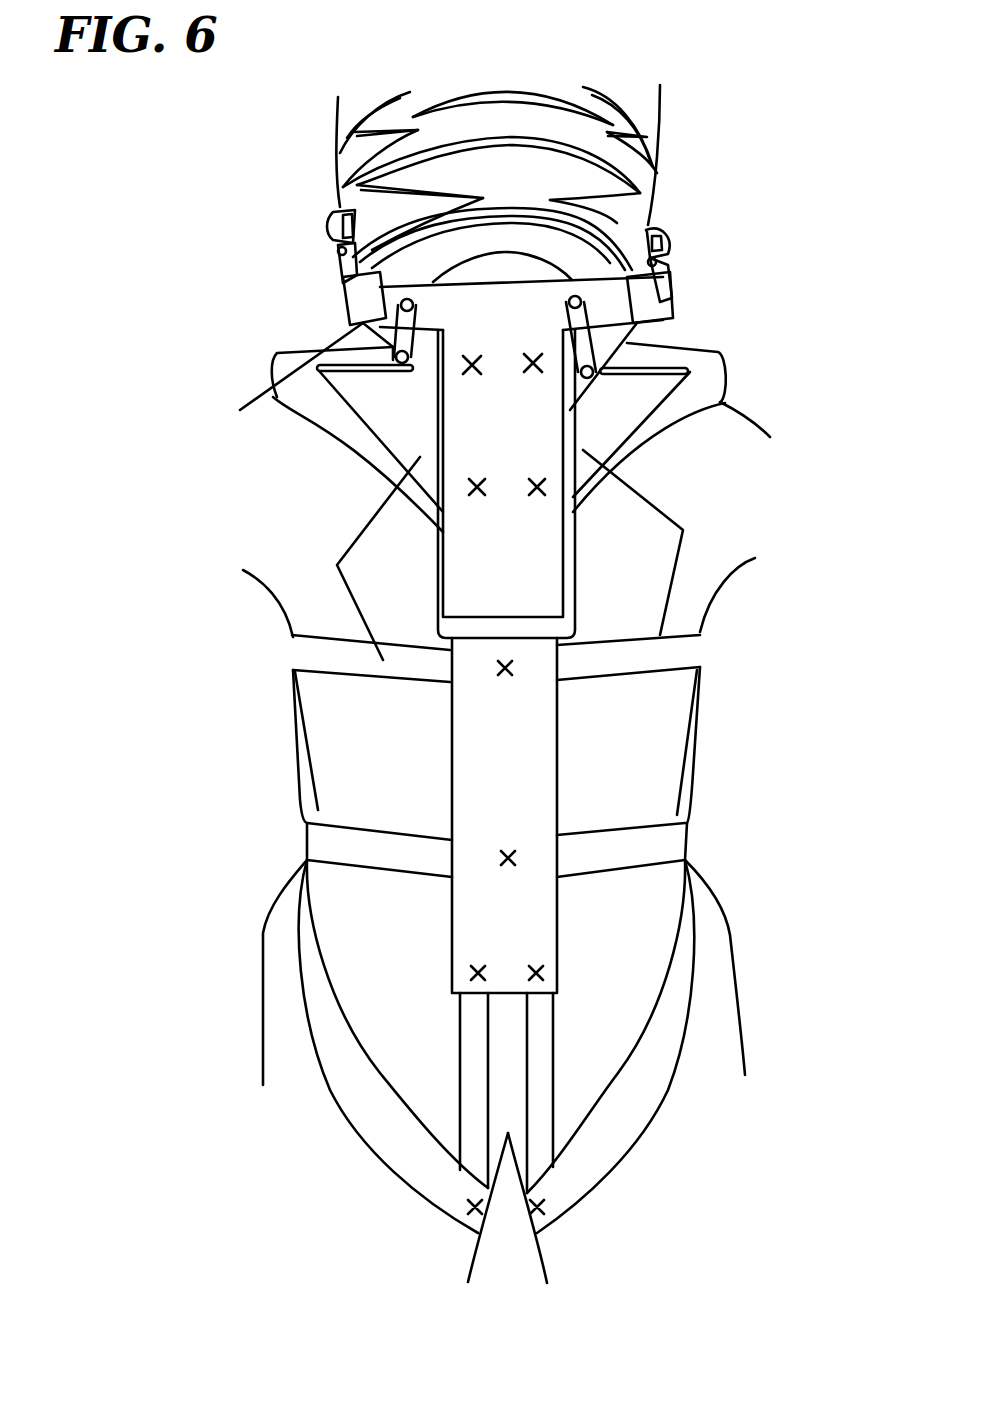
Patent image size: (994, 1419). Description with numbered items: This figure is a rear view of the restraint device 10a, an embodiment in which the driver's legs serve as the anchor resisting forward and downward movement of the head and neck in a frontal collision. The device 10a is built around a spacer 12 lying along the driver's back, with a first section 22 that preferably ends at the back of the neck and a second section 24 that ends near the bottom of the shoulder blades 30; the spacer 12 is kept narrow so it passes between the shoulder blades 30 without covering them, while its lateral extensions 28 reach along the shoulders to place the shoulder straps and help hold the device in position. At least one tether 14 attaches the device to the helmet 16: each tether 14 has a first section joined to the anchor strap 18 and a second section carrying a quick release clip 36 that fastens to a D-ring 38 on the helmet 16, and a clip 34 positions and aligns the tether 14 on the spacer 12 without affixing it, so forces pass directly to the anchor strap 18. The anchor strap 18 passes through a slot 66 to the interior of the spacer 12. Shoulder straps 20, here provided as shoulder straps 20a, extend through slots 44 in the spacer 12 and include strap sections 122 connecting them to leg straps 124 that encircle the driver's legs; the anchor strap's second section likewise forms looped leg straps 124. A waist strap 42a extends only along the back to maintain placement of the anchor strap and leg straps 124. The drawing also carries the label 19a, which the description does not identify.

The restraint device 10a is at (238, 723).
The spacer 12 is at (577, 577).
The tether 14 is at (343, 308).
The helmet 16 is at (660, 90).
The anchor strap 18 is at (517, 912).
The leg straps 19a is at (470, 1032).
The shoulder straps 20 is at (330, 388).
The shoulder straps 20a is at (508, 555).
The first section 22 is at (550, 287).
The second section 24 is at (437, 572).
The lateral extensions 28 is at (273, 362).
The shoulder blades 30 is at (320, 505).
The clip 34 is at (570, 327).
The quick release clips 36 is at (337, 265).
The D-rings 38 is at (325, 215).
The waist strap 42a is at (390, 877).
The slots 44 is at (380, 369).
The slot 66 is at (493, 620).
The strap sections 122 is at (307, 797).
The leg straps 124 is at (357, 1132).